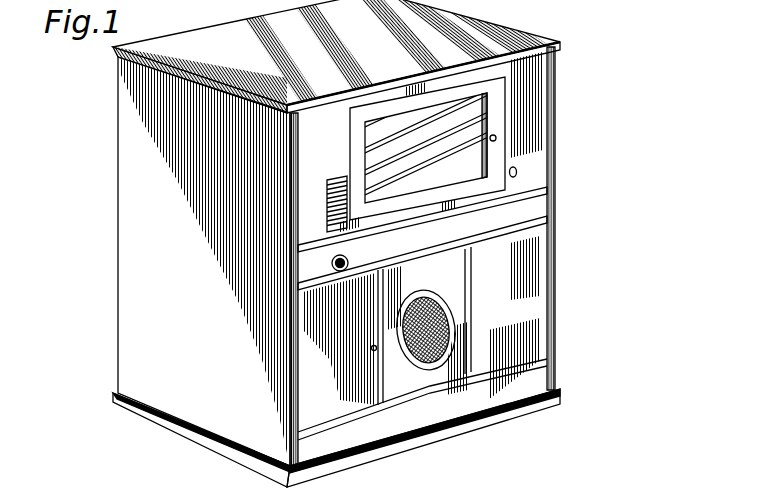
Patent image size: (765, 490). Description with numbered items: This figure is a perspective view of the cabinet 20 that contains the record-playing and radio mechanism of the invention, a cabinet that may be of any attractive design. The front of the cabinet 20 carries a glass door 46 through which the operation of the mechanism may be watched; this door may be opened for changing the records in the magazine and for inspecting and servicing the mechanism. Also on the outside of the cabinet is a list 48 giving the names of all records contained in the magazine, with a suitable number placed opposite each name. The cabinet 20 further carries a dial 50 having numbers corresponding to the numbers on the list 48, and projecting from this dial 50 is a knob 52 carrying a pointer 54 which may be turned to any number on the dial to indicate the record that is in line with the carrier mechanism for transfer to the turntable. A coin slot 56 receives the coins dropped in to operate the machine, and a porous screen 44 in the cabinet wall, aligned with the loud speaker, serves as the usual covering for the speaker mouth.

The cabinet 20 is at (116, 108).
The glass door 46 is at (491, 154).
The coin slot 56 is at (517, 175).
The list 48 is at (326, 220).
The dial 50 is at (332, 263).
The pointer 54 is at (335, 270).
The knob 52 is at (340, 273).
The porous screen 44 is at (454, 328).